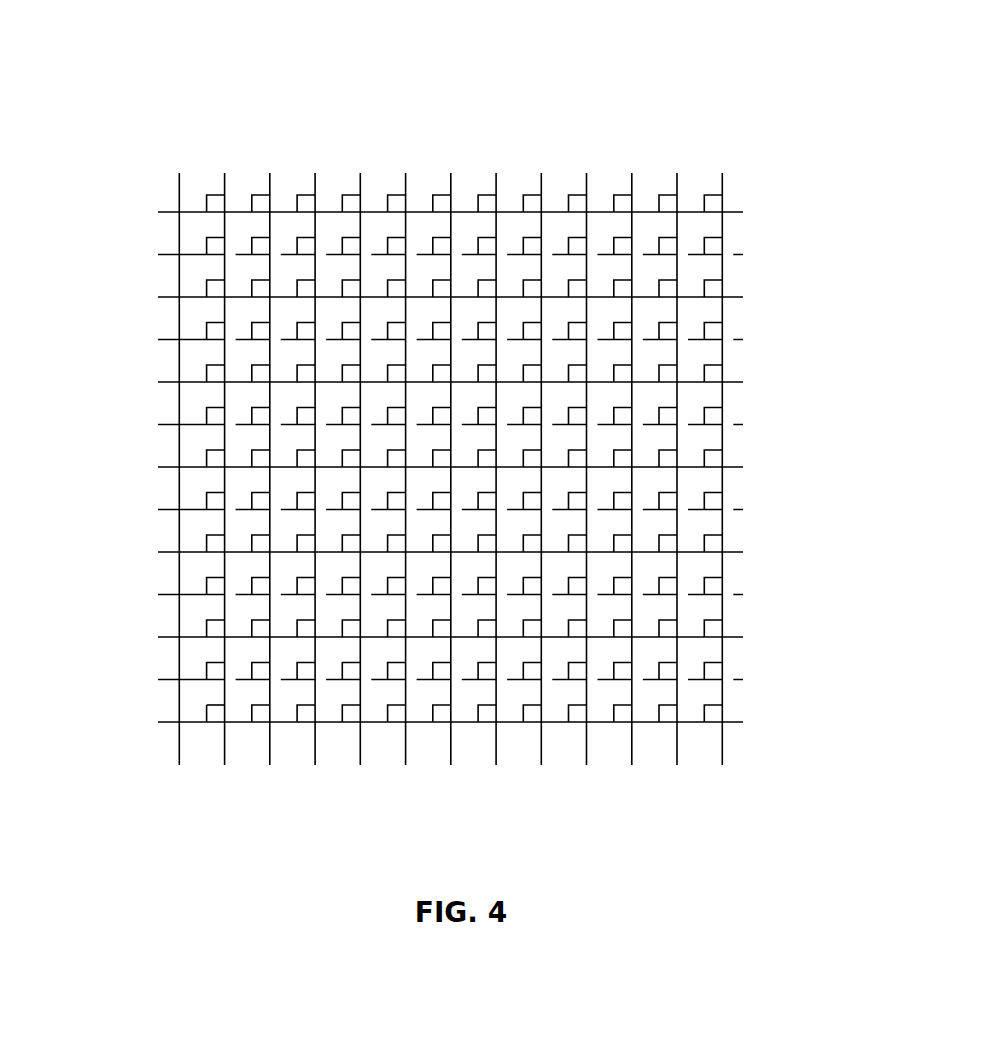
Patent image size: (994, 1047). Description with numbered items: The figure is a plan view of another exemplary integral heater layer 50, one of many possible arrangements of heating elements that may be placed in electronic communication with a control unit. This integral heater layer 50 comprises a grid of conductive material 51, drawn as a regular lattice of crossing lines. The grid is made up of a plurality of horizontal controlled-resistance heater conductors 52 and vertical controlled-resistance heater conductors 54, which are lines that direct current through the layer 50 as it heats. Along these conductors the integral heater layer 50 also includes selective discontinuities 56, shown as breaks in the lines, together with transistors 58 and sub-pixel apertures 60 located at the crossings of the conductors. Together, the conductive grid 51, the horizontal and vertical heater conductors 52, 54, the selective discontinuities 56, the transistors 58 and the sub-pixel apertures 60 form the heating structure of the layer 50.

The integral heater layer 50 is at (589, 93).
The grid of conductive material 51 is at (147, 407).
The horizontal controlled-resistance heater conductors 52 is at (313, 185).
The vertical controlled-resistance heater conductors 54 is at (732, 297).
The selective discontinuities 56 is at (323, 682).
The transistors 58 is at (217, 712).
The sub-pixel apertures 60 is at (195, 705).